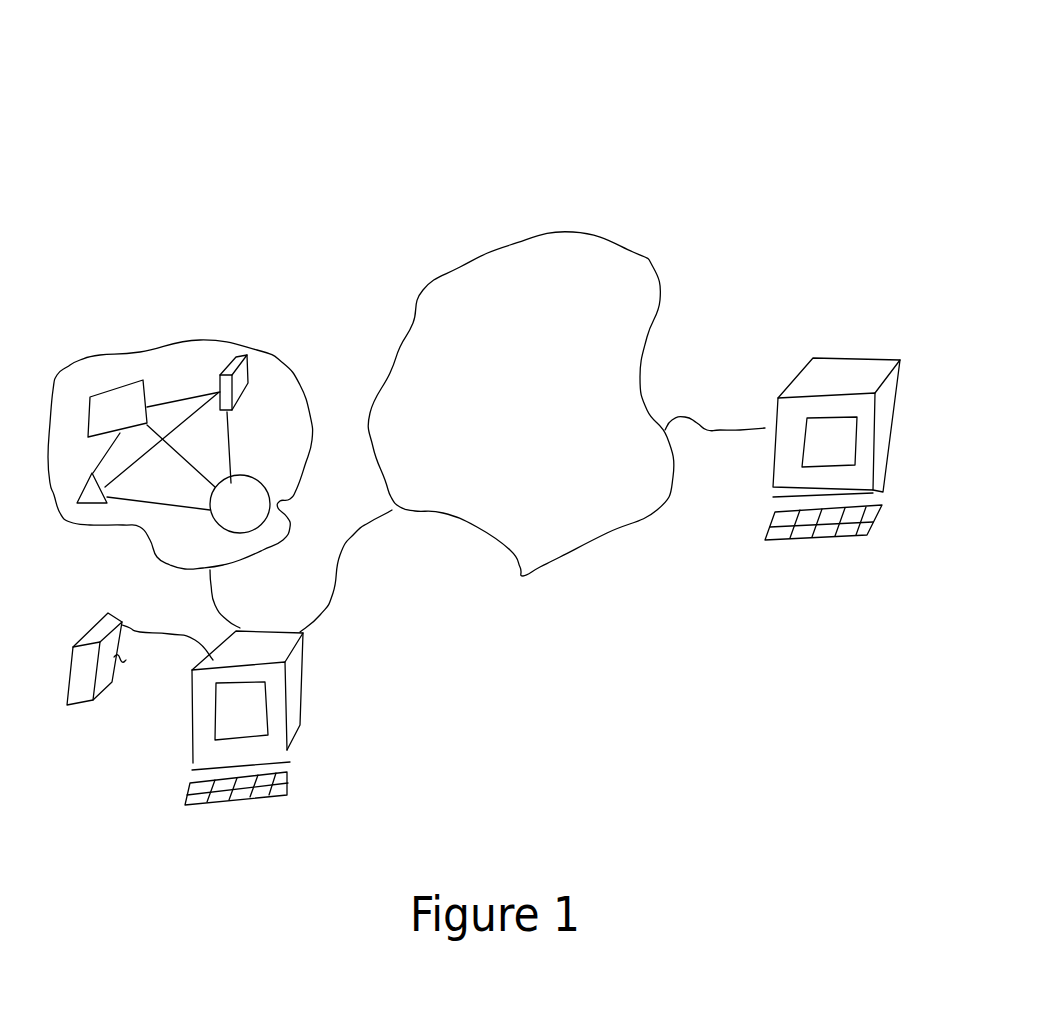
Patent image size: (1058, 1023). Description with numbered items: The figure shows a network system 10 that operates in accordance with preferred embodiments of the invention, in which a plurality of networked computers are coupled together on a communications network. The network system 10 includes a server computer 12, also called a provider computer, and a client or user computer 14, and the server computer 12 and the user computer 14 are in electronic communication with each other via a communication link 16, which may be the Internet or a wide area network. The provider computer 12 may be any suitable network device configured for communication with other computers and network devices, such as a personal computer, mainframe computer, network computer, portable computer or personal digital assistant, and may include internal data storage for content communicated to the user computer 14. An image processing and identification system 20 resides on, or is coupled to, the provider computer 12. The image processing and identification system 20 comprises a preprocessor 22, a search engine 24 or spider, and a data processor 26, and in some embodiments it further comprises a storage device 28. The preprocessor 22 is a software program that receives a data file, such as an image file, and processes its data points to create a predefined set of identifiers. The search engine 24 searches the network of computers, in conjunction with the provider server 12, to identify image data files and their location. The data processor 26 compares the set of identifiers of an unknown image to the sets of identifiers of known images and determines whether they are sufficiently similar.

The network system 10 is at (503, 103).
The server computer 12 is at (302, 690).
The user computer 14 is at (903, 408).
The communication link 16 is at (633, 252).
The image processing and identification system 20 is at (200, 340).
The preprocessor 22 is at (80, 503).
The search engine 24 is at (98, 393).
The data processor 26 is at (290, 499).
The storage device 28 is at (248, 367).